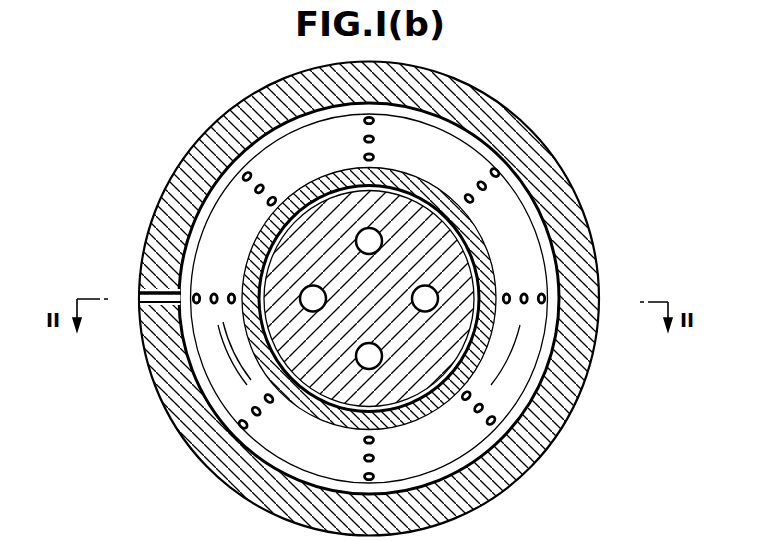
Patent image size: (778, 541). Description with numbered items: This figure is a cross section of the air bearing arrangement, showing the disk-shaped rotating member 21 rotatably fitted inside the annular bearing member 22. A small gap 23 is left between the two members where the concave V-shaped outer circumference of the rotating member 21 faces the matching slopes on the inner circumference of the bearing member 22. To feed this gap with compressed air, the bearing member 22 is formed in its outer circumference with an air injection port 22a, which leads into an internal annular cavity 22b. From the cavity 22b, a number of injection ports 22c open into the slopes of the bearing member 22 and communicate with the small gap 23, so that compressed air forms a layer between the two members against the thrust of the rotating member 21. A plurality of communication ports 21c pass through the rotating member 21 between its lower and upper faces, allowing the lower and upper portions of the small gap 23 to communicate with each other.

The rotating member 21 is at (455, 248).
The communication ports 21c is at (308, 297).
The bearing member 22 is at (585, 271).
The air injection port 22a is at (142, 299).
The annular cavity 22b is at (540, 368).
The injection ports 22c is at (466, 400).
The small gap 23 is at (300, 385).